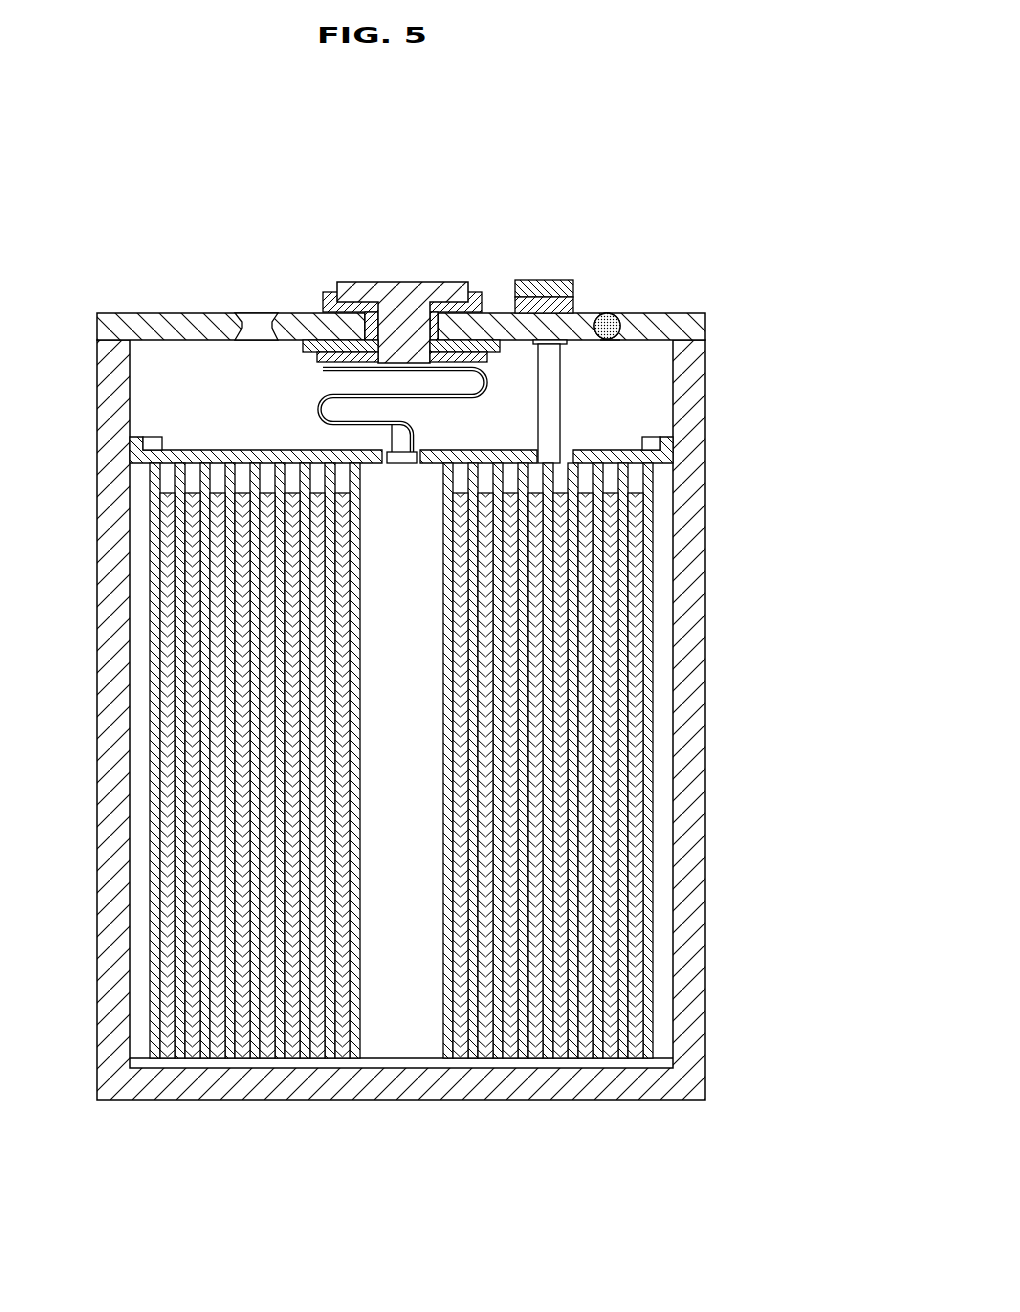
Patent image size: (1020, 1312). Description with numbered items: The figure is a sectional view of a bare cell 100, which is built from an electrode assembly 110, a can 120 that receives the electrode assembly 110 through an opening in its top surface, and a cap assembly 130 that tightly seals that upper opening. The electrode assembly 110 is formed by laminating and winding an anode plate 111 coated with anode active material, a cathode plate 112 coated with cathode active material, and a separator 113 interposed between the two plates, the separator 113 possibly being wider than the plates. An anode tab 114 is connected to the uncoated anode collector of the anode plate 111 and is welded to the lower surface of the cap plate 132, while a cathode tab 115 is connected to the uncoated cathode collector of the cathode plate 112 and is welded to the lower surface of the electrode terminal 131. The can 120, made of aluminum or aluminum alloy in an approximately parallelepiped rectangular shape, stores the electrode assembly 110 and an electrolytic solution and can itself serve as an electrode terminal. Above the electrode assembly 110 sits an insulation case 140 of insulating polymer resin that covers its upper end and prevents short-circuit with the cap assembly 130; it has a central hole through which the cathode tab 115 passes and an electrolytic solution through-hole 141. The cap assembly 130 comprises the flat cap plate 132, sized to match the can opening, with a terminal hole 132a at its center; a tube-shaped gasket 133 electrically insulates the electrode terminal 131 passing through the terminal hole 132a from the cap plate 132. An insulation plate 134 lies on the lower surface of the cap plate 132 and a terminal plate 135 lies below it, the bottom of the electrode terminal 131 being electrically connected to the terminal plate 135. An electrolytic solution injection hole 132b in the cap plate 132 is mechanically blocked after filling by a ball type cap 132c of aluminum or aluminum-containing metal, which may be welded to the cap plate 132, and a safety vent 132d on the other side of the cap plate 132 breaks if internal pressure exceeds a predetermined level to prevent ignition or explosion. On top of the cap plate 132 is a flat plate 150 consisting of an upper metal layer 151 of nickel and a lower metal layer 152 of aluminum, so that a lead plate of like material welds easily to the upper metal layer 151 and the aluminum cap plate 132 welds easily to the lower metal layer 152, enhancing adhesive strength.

The bare cell 100 is at (80, 140).
The electrode assembly 110 is at (417, 846).
The anode plate 111 is at (610, 1060).
The cathode plate 112 is at (637, 1060).
The separator 113 is at (625, 1060).
The anode tab 114 is at (560, 396).
The cathode tab 115 is at (323, 407).
The can 120 is at (695, 618).
The cap assembly 130 is at (448, 300).
The electrode terminal 131 is at (402, 283).
The cap plate 132 is at (162, 315).
The terminal hole 132a is at (440, 344).
The electrolytic solution injection hole 132b is at (613, 342).
The cap 132c is at (612, 312).
The safety vent 132d is at (252, 315).
The gasket 133 is at (480, 285).
The insulation plate 134 is at (310, 350).
The terminal plate 135 is at (323, 363).
The insulation case 140 is at (670, 453).
The electrolytic solution through-hole 141 is at (570, 450).
The flat plate 150 is at (574, 245).
The upper metal layer 151 is at (547, 278).
The lower metal layer 152 is at (575, 305).